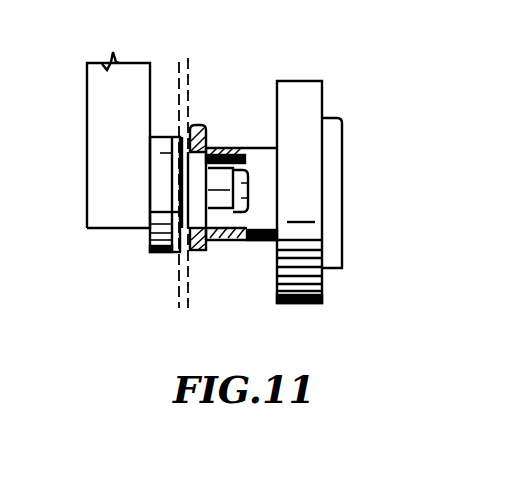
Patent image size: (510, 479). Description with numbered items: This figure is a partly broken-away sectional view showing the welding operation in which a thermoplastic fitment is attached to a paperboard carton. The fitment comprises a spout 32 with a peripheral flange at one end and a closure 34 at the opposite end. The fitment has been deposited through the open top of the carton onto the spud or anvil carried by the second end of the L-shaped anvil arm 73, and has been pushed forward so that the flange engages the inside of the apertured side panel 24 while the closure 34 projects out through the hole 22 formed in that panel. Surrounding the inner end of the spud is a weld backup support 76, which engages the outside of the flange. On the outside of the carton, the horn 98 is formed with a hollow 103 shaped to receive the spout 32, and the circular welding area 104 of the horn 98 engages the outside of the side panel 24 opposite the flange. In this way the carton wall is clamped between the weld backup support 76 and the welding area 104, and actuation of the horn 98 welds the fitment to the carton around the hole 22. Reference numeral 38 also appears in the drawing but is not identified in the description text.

The hole 22 is at (160, 130).
The apertured side panel 24 is at (190, 125).
The spout 32 is at (215, 148).
The closure 34 is at (248, 197).
The seal ring 38 is at (193, 250).
The L-shaped anvil arm 73 is at (104, 99).
The weld backup support 76 is at (158, 193).
The horn 98 is at (303, 181).
The hollow 103 is at (160, 257).
The circular welding area 104 is at (237, 91).